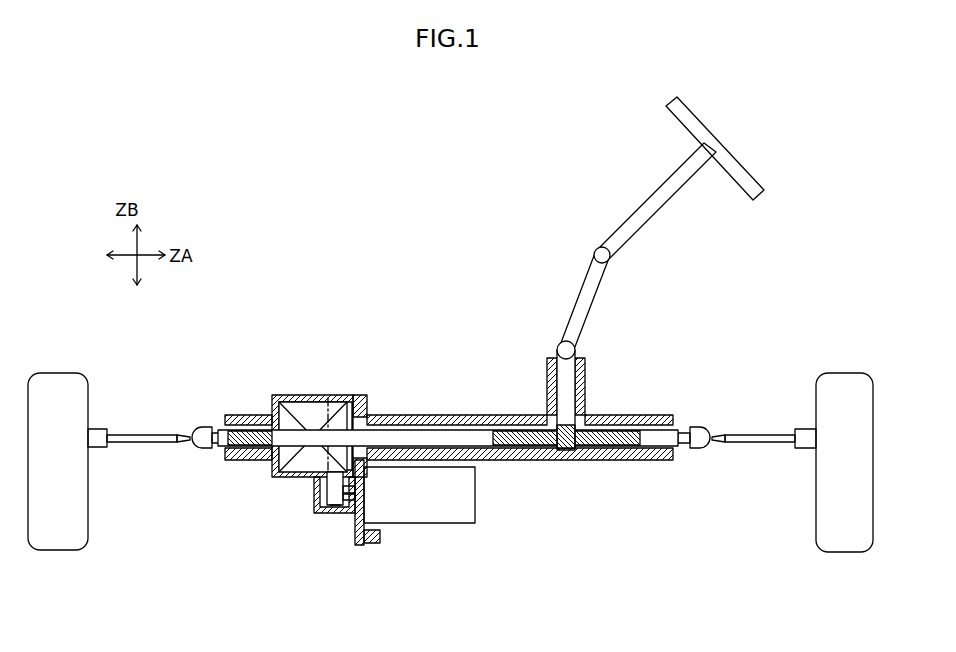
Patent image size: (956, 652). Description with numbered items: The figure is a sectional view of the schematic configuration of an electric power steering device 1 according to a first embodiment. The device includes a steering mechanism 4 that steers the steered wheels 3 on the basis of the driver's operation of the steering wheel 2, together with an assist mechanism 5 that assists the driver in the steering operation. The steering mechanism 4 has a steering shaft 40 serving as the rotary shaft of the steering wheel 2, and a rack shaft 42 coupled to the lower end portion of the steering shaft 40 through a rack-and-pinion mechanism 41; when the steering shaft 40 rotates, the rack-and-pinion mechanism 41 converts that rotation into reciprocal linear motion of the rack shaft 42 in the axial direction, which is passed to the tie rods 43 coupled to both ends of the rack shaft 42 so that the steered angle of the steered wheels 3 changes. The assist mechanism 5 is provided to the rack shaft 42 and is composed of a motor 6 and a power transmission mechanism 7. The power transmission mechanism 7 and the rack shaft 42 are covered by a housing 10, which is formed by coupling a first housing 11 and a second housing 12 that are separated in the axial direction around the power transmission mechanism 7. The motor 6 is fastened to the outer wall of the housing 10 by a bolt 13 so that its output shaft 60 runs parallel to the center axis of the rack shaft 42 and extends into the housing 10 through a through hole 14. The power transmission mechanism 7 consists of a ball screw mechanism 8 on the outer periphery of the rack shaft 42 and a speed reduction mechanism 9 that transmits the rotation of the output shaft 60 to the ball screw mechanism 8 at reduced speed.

The electric power steering device 1 is at (301, 214).
The steering wheel 2 is at (696, 114).
The steered wheels 3 is at (56, 373).
The steering mechanism 4 is at (631, 226).
The assist mechanism 5 is at (316, 415).
The motor 6 is at (468, 525).
The power transmission mechanism 7 is at (302, 502).
The ball screw mechanism 8 is at (304, 474).
The speed reduction mechanism 9 is at (317, 499).
The housing 10 is at (320, 402).
The first housing 11 is at (314, 395).
The second housing 12 is at (353, 416).
The bolt 13 is at (381, 534).
The through hole 14 is at (357, 490).
The steering shaft 40 is at (588, 272).
The rack-and-pinion mechanism 41 is at (570, 459).
The rack shaft 42 is at (482, 447).
The tie rods 43 is at (141, 434).
The output shaft 60 is at (357, 497).